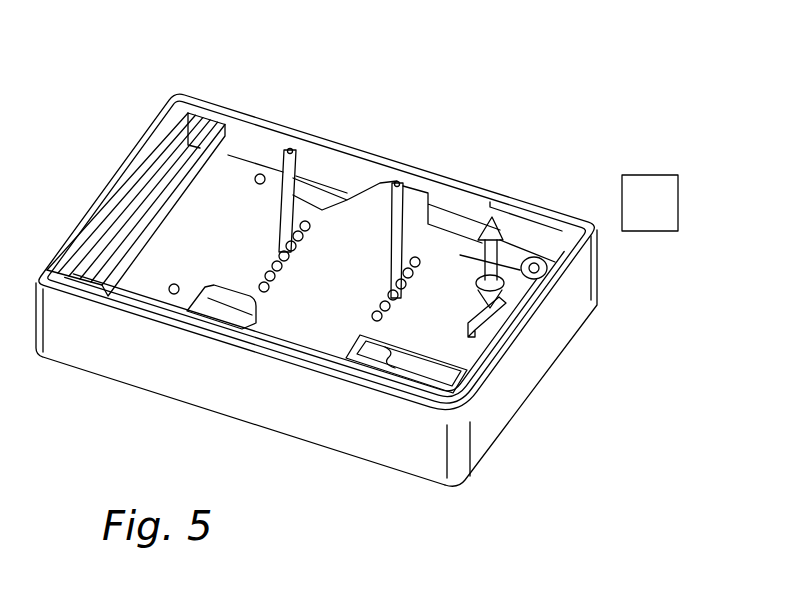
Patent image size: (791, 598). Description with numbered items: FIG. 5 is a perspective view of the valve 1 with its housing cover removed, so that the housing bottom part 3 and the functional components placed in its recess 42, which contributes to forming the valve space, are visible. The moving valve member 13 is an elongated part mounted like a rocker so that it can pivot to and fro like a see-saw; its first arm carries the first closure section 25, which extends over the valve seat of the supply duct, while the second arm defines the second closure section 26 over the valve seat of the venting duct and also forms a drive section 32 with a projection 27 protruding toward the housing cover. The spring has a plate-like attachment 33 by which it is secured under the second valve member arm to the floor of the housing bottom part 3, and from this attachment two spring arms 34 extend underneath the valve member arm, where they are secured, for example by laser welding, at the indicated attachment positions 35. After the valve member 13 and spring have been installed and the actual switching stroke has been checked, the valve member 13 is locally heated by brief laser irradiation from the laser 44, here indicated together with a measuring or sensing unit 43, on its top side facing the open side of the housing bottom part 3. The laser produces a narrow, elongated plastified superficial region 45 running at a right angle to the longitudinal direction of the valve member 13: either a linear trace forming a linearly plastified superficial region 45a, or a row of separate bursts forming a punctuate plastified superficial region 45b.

The valve 1 is at (587, 145).
The housing bottom part 3 is at (530, 380).
The valve member 13 is at (297, 330).
The first closure section 25 is at (230, 163).
The second closure section 26 is at (482, 352).
The projection 27 is at (483, 323).
The drive section 32 is at (521, 358).
The plate-like attachment 33 is at (430, 380).
The spring arms 34 is at (305, 198).
The attachment positions 35 is at (180, 287).
The recess 42 is at (190, 228).
The sensor 43 is at (492, 205).
The laser 44 is at (288, 148).
The plastified superficial region 45 is at (404, 201).
The linearly plastified superficial region 45a is at (300, 250).
The second spring element 45b is at (418, 283).